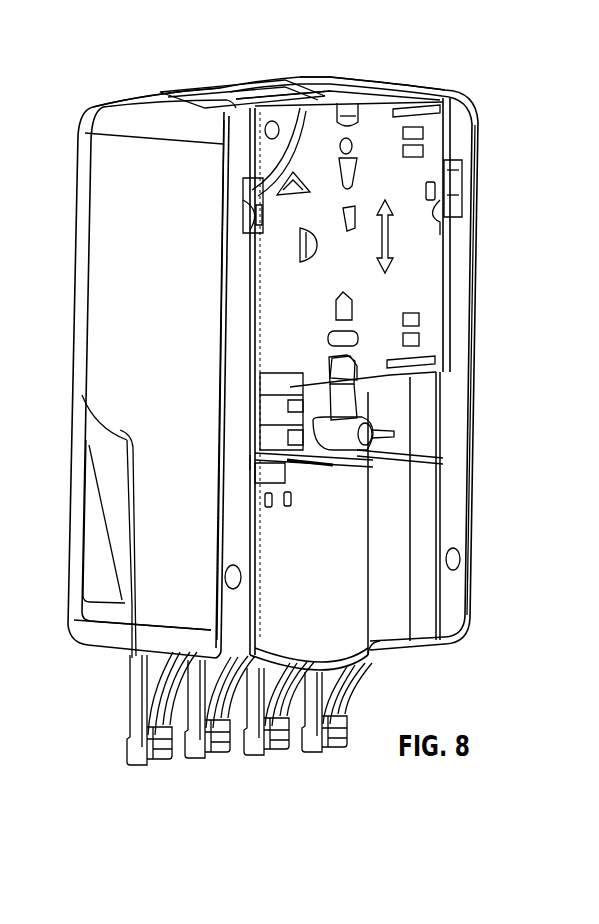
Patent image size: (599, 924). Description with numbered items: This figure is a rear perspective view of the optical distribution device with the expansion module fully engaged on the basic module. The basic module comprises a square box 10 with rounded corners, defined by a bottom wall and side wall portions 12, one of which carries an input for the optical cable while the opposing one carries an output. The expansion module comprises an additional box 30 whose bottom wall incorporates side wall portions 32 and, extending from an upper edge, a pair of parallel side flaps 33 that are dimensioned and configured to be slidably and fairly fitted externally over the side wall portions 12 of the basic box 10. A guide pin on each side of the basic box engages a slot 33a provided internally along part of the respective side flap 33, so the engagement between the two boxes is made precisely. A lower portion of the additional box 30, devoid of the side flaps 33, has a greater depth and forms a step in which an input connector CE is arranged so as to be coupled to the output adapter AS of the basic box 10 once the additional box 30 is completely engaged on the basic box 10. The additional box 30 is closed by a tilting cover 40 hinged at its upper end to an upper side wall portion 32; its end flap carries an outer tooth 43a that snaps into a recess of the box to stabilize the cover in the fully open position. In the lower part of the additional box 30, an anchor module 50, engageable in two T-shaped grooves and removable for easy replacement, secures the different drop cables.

The square box 10 is at (449, 130).
The side wall portions 12 is at (298, 97).
The additional box 30 is at (467, 642).
The side wall portions 32 is at (150, 95).
The side flaps 33 is at (233, 329).
The slot 33a is at (255, 226).
The tilting cover 40 is at (78, 148).
The outer tooth 43a is at (229, 81).
The anchor module 50 is at (278, 759).
The output adapter AS is at (259, 409).
The input connector CE is at (268, 477).